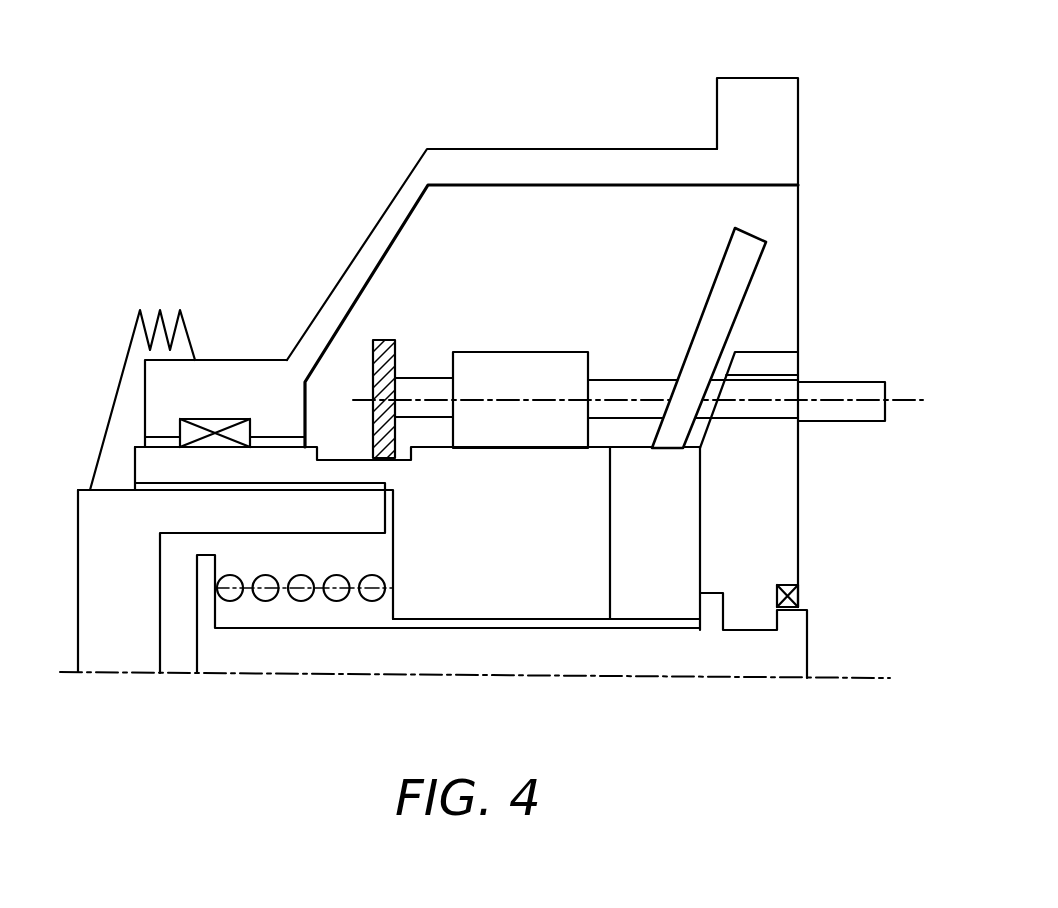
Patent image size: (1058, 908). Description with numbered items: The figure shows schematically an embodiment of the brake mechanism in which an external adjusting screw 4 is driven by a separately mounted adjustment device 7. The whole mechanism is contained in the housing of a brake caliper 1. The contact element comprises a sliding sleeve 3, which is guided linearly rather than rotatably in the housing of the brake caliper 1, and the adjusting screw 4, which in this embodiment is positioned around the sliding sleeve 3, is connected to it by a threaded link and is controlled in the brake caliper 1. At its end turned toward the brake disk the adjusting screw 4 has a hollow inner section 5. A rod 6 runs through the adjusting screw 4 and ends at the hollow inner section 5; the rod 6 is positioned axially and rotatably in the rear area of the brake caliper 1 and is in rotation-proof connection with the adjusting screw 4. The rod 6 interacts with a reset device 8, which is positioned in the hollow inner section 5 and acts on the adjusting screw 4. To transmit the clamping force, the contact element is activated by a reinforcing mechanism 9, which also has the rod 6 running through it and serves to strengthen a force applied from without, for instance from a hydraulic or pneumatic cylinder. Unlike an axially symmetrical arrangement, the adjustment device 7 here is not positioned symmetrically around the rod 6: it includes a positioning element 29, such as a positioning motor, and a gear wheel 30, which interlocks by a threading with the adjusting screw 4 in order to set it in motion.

The brake caliper 1 is at (777, 117).
The sliding sleeve 3 is at (115, 608).
The adjusting screw 4 is at (543, 565).
The hollow inner section 5 is at (311, 567).
The rod 6 is at (705, 658).
The adjustment device 7 is at (602, 286).
The reset device 8 is at (305, 598).
The reinforcing mechanism 9 is at (660, 518).
The positioning element 29 is at (510, 373).
The gear wheel 30 is at (372, 375).